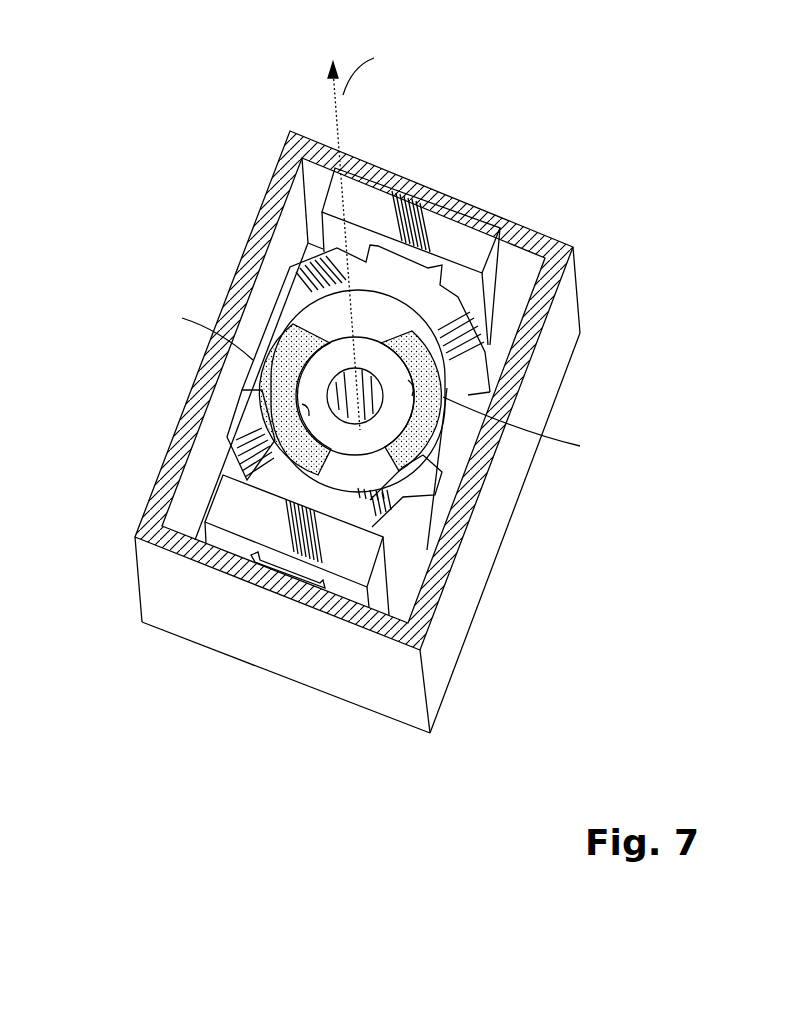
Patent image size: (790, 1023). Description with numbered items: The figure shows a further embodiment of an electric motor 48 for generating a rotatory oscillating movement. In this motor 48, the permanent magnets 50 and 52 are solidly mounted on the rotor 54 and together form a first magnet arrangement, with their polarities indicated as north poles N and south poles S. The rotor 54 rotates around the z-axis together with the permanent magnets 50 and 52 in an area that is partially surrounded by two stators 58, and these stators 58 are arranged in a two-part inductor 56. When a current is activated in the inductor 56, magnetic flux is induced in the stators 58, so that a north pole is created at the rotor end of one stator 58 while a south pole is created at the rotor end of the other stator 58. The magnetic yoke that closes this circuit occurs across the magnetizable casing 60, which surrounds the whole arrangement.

The motor 48 is at (150, 152).
The permanent magnet 50 is at (420, 427).
The permanent magnet 52 is at (282, 393).
The rotor 54 is at (385, 425).
The two-part inductor 56 is at (452, 220).
The stator 58 is at (473, 360).
The magnetizable casing 60 is at (545, 232).